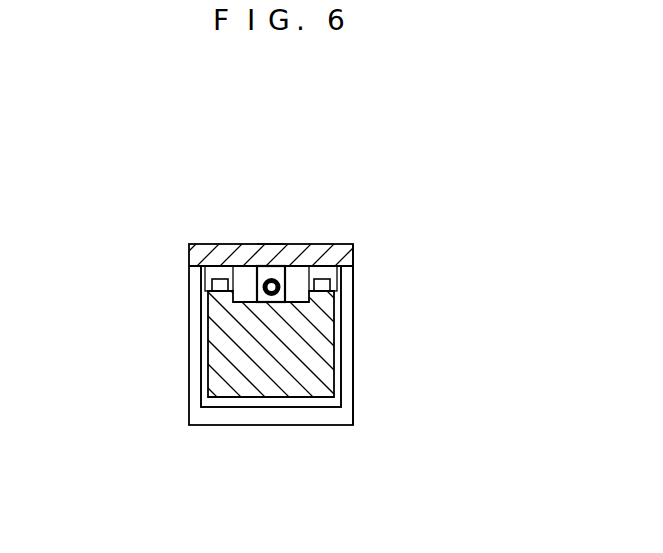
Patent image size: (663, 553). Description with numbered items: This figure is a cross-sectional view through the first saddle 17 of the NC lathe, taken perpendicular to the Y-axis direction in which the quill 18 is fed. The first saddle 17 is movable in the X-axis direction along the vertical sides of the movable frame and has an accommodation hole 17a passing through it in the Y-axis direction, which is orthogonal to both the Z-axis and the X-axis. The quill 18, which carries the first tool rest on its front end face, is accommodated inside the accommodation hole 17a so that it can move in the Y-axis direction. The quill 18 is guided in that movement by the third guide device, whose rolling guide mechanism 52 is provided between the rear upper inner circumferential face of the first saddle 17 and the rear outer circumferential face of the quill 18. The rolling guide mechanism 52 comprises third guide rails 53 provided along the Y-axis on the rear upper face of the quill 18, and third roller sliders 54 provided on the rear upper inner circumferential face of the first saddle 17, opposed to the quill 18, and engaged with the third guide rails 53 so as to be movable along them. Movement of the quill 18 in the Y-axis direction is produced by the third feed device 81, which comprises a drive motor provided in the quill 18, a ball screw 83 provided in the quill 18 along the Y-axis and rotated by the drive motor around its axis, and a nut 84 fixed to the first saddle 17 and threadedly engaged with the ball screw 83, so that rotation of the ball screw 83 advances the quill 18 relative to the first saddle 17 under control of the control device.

The first saddle 17 is at (353, 253).
The accommodation hole 17a is at (217, 348).
The quill 18 is at (330, 370).
The rolling guide mechanism 52 is at (357, 276).
The third guide rails 53 is at (210, 290).
The third roller sliders 54 is at (220, 272).
The third feed device 81 is at (272, 229).
The ball screw 83 is at (277, 278).
The nut 84 is at (264, 270).